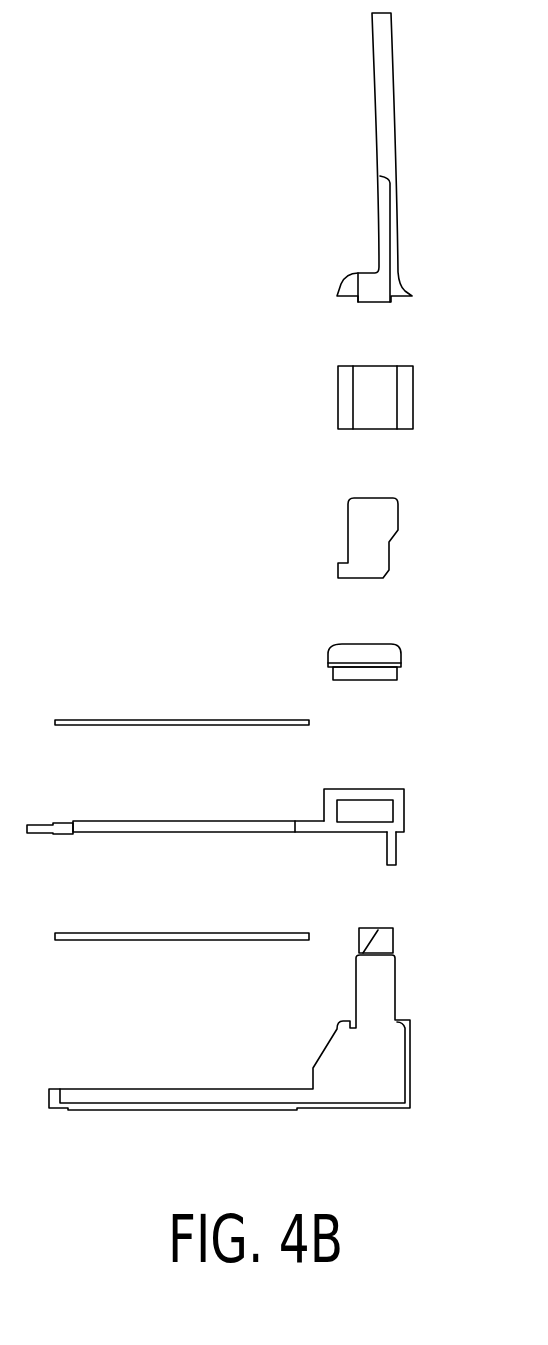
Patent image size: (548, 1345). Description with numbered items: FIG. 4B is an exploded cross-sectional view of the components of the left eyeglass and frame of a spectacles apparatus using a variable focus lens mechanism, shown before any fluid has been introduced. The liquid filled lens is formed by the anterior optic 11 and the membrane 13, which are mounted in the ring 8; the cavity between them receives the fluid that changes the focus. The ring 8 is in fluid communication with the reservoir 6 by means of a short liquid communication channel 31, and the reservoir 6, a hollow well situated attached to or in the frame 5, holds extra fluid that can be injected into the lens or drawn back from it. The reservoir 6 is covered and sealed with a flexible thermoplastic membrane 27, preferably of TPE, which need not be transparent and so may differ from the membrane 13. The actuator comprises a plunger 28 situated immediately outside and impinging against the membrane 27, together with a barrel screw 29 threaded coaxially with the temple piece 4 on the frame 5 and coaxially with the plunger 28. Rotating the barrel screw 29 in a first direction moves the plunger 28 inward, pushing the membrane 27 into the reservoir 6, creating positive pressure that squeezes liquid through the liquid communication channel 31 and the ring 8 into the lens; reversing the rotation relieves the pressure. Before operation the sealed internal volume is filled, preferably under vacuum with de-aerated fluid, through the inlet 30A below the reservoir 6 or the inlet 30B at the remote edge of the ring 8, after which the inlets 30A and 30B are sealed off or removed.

The temple piece 4 is at (378, 130).
The barrel screw 29 is at (402, 402).
The plunger 28 is at (385, 520).
The membrane 27 is at (385, 655).
The membrane 13 is at (163, 725).
The ring 8 is at (98, 828).
The inlet 30B is at (40, 832).
The liquid communication channel 31 is at (310, 827).
The reservoir 6 is at (378, 812).
The inlet 30A is at (393, 847).
The anterior optic 11 is at (67, 937).
The frame 5 is at (385, 1050).